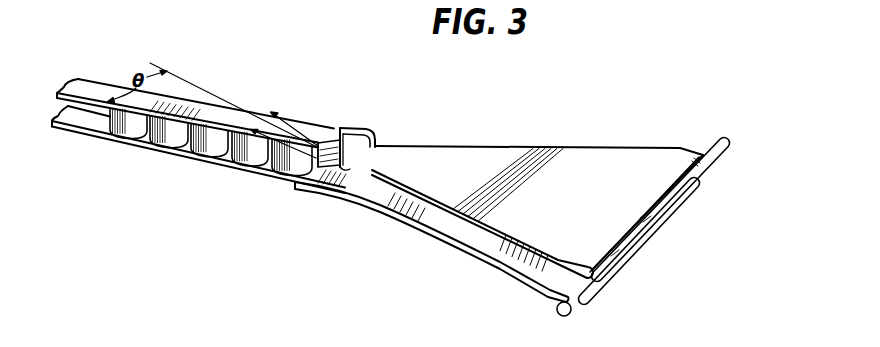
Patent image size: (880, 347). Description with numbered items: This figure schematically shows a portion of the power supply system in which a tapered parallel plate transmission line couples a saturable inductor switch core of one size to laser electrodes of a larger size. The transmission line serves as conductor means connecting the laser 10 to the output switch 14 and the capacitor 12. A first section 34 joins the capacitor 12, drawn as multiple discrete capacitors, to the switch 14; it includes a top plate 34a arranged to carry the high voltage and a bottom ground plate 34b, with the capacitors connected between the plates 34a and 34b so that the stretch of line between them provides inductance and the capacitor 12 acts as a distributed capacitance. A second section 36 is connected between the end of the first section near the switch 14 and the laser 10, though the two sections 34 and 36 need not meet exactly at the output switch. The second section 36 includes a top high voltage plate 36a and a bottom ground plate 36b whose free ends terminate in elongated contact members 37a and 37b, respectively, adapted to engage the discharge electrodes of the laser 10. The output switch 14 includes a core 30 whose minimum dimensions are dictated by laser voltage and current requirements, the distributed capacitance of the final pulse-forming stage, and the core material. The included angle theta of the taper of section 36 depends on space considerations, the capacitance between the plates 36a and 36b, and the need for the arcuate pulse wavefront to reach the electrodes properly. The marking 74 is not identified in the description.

The laser 10 is at (567, 316).
The capacitor 12 is at (132, 140).
The output switch 14 is at (352, 128).
The core 30 is at (358, 128).
The first section 34 is at (202, 103).
The top plate 34a is at (257, 100).
The bottom ground plate 34b is at (312, 186).
The second section 36 is at (517, 145).
The top high voltage plate 36a is at (411, 146).
The bottom ground plate 36b is at (380, 210).
The contact member 37a is at (690, 180).
The contact member 37b is at (667, 221).
The marking 74 is at (297, 334).